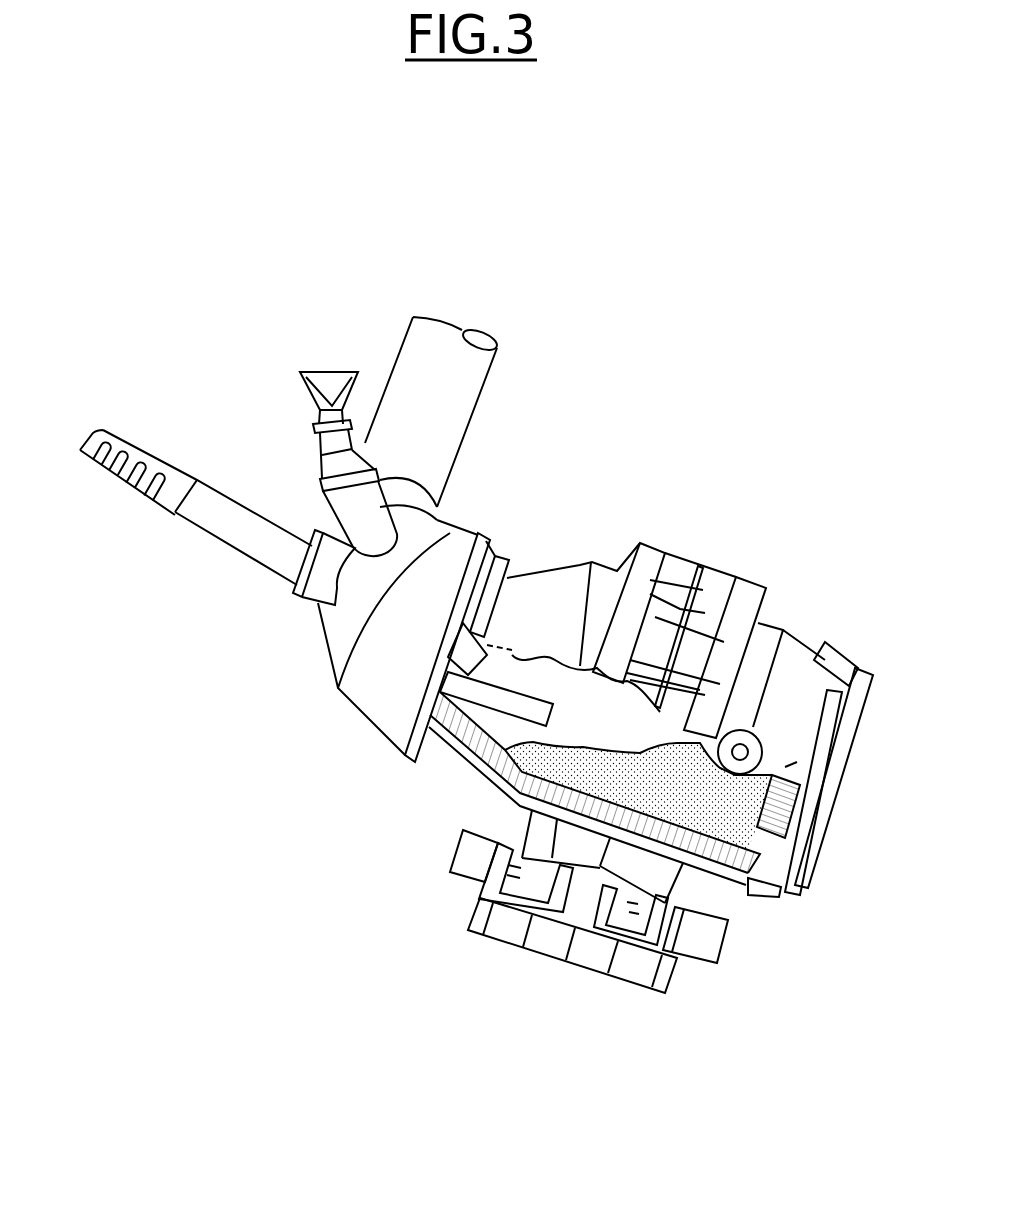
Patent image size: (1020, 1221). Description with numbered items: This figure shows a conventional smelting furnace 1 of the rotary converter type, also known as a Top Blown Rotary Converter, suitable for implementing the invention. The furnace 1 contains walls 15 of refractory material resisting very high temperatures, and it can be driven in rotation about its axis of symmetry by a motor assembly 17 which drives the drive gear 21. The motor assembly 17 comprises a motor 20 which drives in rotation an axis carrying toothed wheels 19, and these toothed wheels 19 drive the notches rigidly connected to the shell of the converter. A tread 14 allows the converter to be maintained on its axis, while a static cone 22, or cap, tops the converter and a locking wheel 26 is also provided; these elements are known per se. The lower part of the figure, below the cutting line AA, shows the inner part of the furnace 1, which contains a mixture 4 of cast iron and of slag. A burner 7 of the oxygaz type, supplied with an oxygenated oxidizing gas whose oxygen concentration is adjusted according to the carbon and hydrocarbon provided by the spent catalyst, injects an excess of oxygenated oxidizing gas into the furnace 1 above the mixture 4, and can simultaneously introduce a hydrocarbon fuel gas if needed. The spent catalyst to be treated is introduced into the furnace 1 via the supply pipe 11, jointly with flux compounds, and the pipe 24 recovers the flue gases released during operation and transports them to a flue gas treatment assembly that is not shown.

The furnace 1 is at (725, 483).
The mixture 4 is at (737, 805).
The burner 7 is at (230, 515).
The supply pipe 11 is at (323, 447).
The tread 14 is at (778, 622).
The walls 15 is at (730, 848).
The motor assembly 17 is at (701, 992).
The toothed wheels 19 is at (645, 925).
The motor 20 is at (717, 943).
The drive gear 21 is at (650, 557).
The static cone 22 is at (450, 552).
The pipe 24 is at (472, 403).
The locking wheel 26 is at (762, 753).
The cutting line AA is at (563, 658).